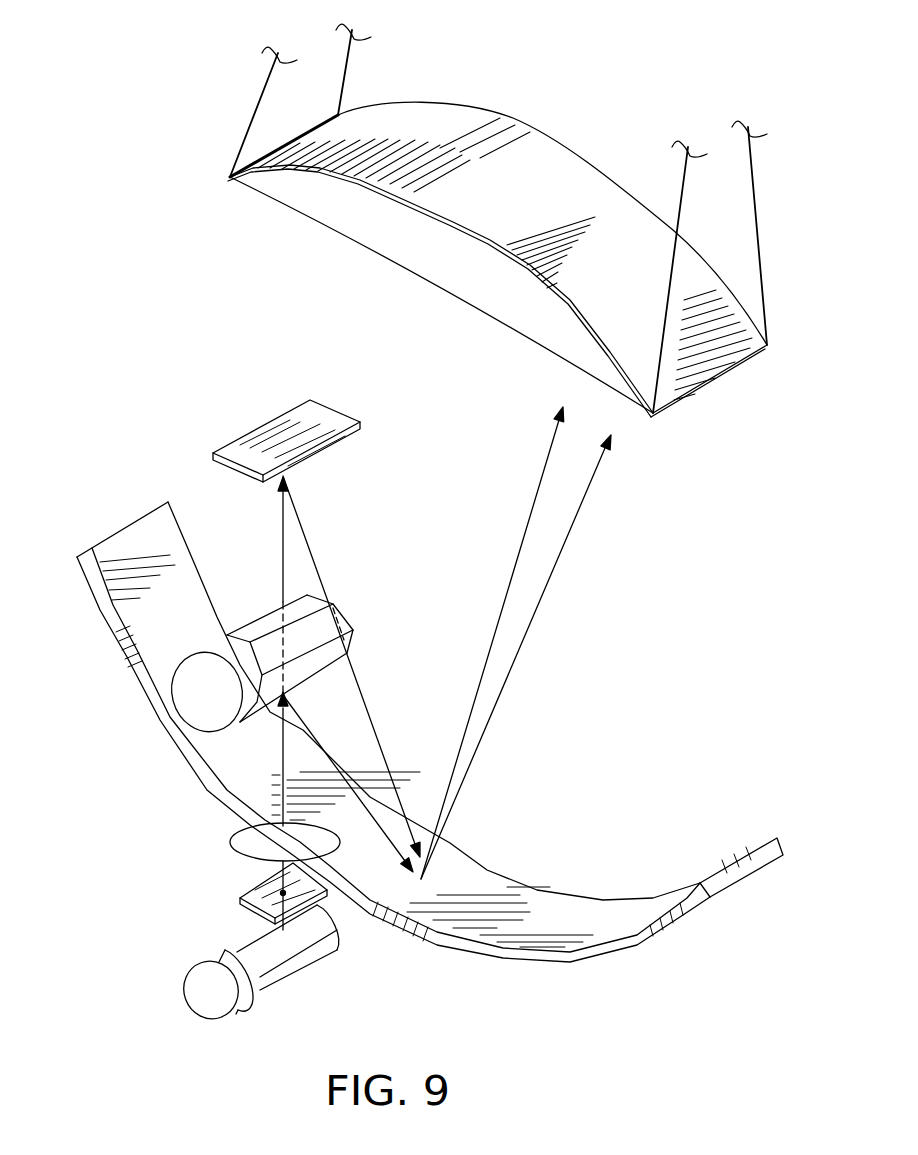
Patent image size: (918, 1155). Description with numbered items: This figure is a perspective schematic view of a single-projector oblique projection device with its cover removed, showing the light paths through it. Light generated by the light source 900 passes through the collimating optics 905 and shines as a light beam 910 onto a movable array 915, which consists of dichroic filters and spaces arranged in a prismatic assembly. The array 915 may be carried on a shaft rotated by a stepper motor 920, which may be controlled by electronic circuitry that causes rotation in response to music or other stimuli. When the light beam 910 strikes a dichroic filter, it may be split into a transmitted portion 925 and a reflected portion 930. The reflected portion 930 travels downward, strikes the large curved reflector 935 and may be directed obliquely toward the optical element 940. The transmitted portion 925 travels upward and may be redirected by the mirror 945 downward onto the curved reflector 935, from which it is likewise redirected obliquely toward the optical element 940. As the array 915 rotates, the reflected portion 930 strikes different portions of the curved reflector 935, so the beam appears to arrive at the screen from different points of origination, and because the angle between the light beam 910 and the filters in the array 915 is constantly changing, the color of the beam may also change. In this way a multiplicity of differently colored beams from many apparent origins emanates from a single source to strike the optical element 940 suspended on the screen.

The light source 900 is at (297, 960).
The collimating optics 905 is at (260, 833).
The light beam 910 is at (287, 750).
The movable array 915 is at (262, 632).
The stepper motor 920 is at (200, 713).
The transmitted portion 925 is at (282, 563).
The reflected portion 930 is at (322, 742).
The curved reflector 935 is at (707, 900).
The optical element 940 is at (513, 118).
The mirror 945 is at (333, 444).